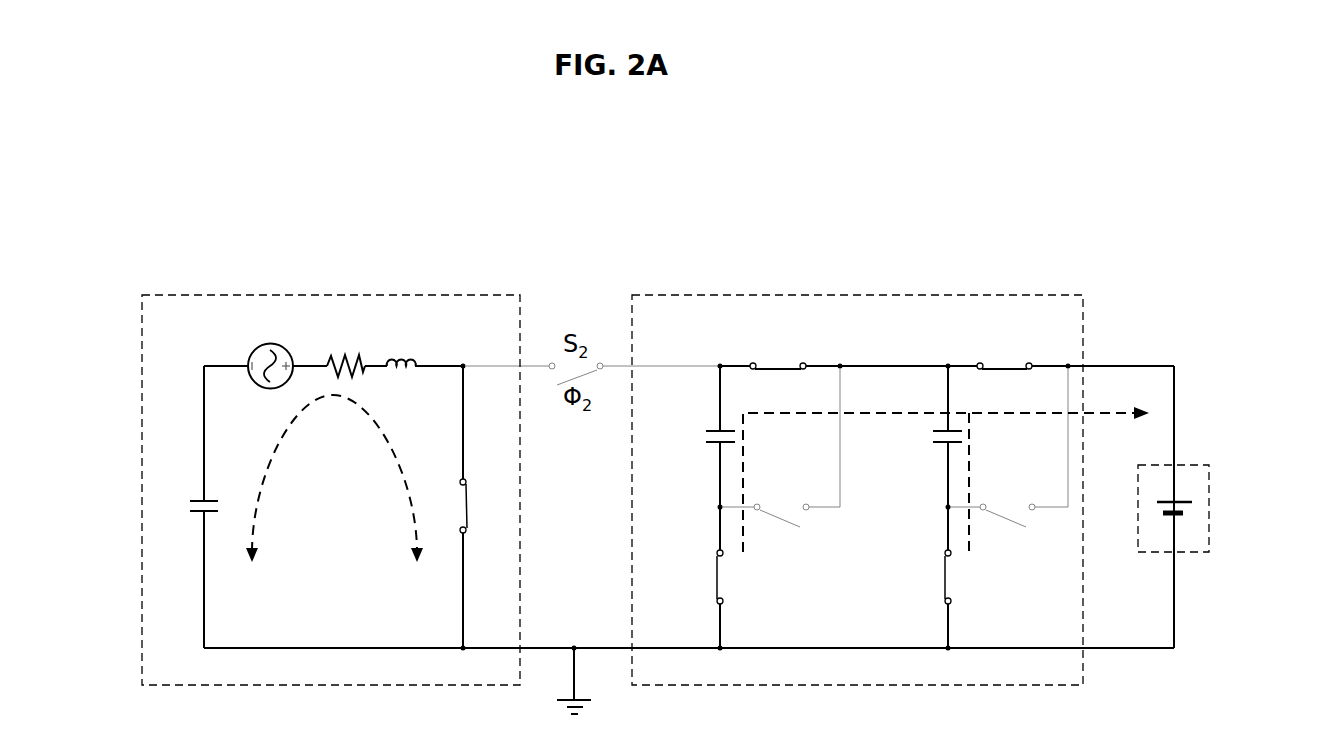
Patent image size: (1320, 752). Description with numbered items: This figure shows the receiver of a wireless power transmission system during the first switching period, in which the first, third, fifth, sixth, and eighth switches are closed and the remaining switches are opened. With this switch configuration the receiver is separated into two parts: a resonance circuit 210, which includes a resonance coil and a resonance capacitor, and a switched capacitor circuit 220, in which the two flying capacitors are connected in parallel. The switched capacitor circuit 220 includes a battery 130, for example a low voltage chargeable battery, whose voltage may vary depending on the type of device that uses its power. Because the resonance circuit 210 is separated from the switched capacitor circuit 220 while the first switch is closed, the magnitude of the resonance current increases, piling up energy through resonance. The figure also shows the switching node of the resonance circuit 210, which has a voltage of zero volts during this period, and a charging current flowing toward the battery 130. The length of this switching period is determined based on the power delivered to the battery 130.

The resonance circuit 210 is at (330, 295).
The switched capacitor circuit 220 is at (868, 295).
The battery 130 is at (1192, 465).